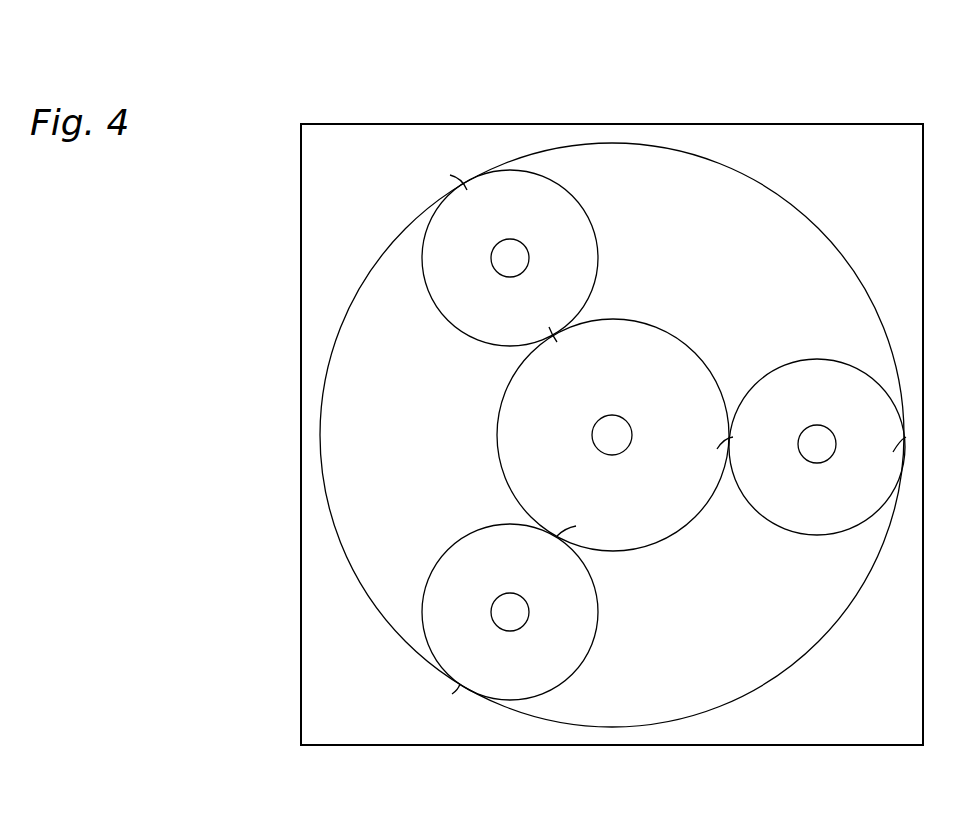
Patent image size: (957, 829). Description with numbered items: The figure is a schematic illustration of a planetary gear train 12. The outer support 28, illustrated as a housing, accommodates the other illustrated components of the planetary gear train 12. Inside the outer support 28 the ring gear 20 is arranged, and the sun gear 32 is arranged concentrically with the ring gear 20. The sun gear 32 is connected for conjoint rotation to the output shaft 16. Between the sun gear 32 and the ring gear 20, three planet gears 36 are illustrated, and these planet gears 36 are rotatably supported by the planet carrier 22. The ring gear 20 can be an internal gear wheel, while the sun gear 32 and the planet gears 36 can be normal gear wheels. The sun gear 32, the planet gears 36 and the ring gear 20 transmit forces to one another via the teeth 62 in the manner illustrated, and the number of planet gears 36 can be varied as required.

The planetary gear train 12 is at (188, 757).
The output shaft 16 is at (620, 433).
The ring gear 20 is at (340, 328).
The planet carrier 22 is at (510, 262).
The outer support 28 is at (301, 592).
The sun gear 32 is at (566, 469).
The planet gears 36 is at (542, 228).
The teeth 62 is at (657, 434).